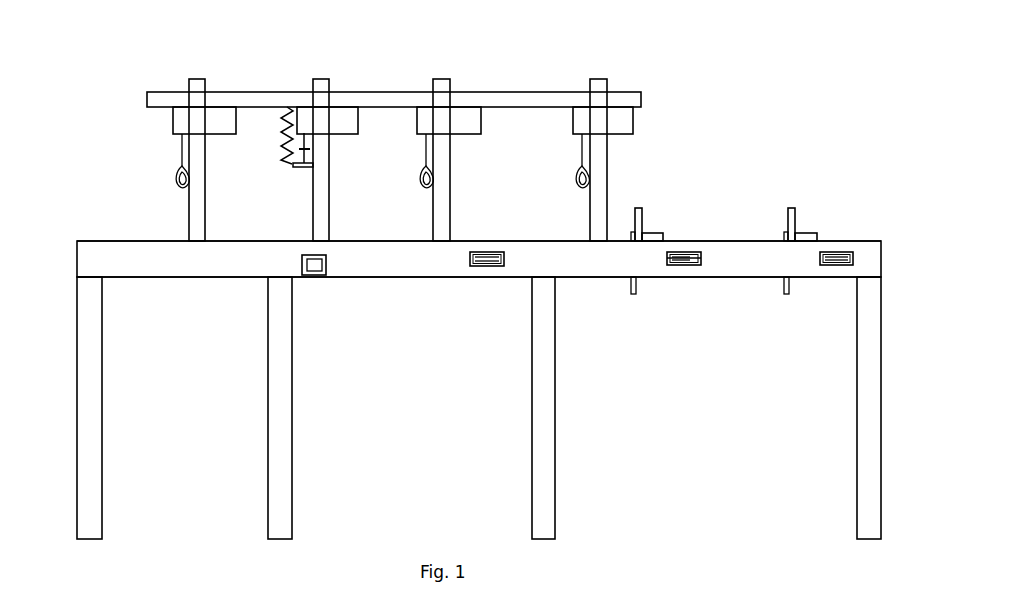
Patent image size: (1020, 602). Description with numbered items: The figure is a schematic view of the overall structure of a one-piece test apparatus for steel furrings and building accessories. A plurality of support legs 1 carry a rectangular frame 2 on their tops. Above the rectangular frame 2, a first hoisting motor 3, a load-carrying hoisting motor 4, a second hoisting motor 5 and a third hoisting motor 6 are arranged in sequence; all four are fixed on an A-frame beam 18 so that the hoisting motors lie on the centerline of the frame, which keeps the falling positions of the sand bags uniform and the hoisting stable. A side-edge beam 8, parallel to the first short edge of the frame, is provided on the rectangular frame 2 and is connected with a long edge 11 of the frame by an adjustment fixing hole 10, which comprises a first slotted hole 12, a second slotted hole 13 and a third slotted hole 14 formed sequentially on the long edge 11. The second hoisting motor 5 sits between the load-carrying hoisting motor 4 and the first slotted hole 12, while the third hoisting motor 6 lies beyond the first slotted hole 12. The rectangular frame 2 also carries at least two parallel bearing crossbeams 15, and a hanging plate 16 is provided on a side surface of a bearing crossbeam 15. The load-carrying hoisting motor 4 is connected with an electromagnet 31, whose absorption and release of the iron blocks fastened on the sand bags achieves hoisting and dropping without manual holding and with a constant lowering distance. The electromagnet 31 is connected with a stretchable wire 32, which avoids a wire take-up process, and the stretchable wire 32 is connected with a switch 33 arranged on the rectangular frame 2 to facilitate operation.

The support leg 1 is at (93, 415).
The rectangular frame 2 is at (117, 259).
The first hoisting motor 3 is at (181, 122).
The load-carrying hoisting motor 4 is at (350, 113).
The second hoisting motor 5 is at (474, 110).
The third hoisting motor 6 is at (627, 113).
The side-edge beam 8 is at (692, 255).
The adjustment fixing hole 10 is at (529, 262).
The long edge 11 is at (414, 263).
The first slotted hole 12 is at (499, 266).
The second slotted hole 13 is at (670, 265).
The third slotted hole 14 is at (837, 253).
The bearing crossbeam 15 is at (640, 212).
The hanging plate 16 is at (790, 292).
The A-frame beam 18 is at (527, 99).
The electromagnet 31 is at (283, 187).
The stretchable wire 32 is at (280, 130).
The switch 33 is at (317, 262).